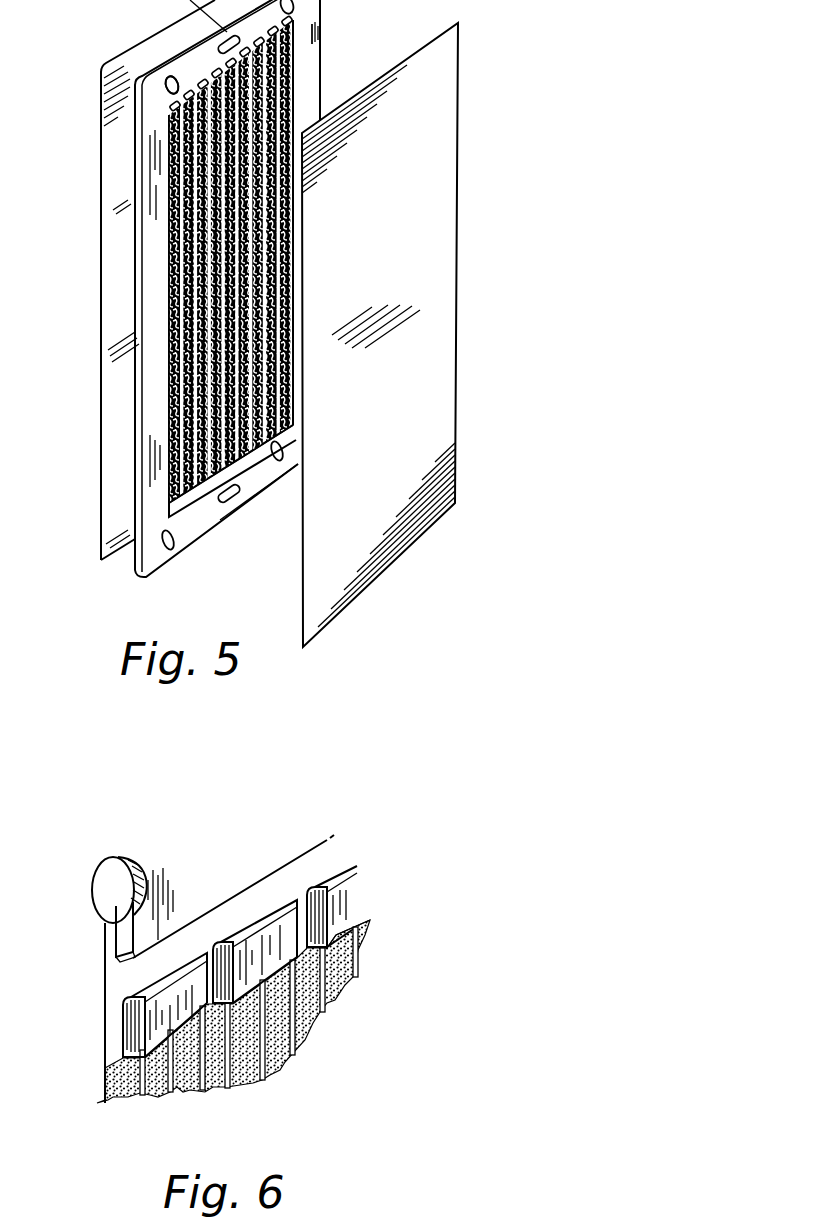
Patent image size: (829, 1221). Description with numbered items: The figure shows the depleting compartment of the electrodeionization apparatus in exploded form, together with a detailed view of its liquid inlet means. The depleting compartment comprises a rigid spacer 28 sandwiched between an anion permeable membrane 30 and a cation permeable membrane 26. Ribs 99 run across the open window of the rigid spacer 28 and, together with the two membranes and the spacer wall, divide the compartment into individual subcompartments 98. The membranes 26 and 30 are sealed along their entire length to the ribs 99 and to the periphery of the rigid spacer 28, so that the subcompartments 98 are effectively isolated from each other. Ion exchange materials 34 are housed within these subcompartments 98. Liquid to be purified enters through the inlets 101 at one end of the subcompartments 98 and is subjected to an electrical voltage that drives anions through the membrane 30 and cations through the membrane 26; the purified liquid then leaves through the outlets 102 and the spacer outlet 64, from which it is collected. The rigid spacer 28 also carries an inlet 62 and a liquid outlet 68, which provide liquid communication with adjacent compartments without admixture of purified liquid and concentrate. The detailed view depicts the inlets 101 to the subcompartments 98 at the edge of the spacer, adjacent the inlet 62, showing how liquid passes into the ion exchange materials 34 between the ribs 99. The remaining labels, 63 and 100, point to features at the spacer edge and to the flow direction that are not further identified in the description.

In FIG. 5, the cation permeable membrane 26 is at (405, 550).
In FIG. 5, the rigid spacer 28 is at (135, 158).
In FIG. 5, the anion permeable membrane 30 is at (100, 462).
In FIG. 5, the ion exchange materials 34 is at (170, 372).
In FIG. 6, the ion exchange materials 34 is at (340, 990).
In FIG. 5, the inlet 62 is at (168, 80).
In FIG. 6, the inlet 62 is at (110, 873).
In FIG. 5, the frame bottom edge 63 is at (236, 498).
In FIG. 5, the outlet 64 is at (278, 463).
In FIG. 5, the liquid outlet 68 is at (175, 552).
In FIG. 5, the subcompartments 98 is at (176, 258).
In FIG. 6, the subcompartments 98 is at (208, 1083).
In FIG. 5, the ribs 99 is at (287, 92).
In FIG. 5, the direction of flow 100 is at (310, 27).
In FIG. 6, the direction of flow 100 is at (138, 975).
In FIG. 6, the inlets 101 is at (297, 899).
In FIG. 5, the outlets 102 is at (203, 493).